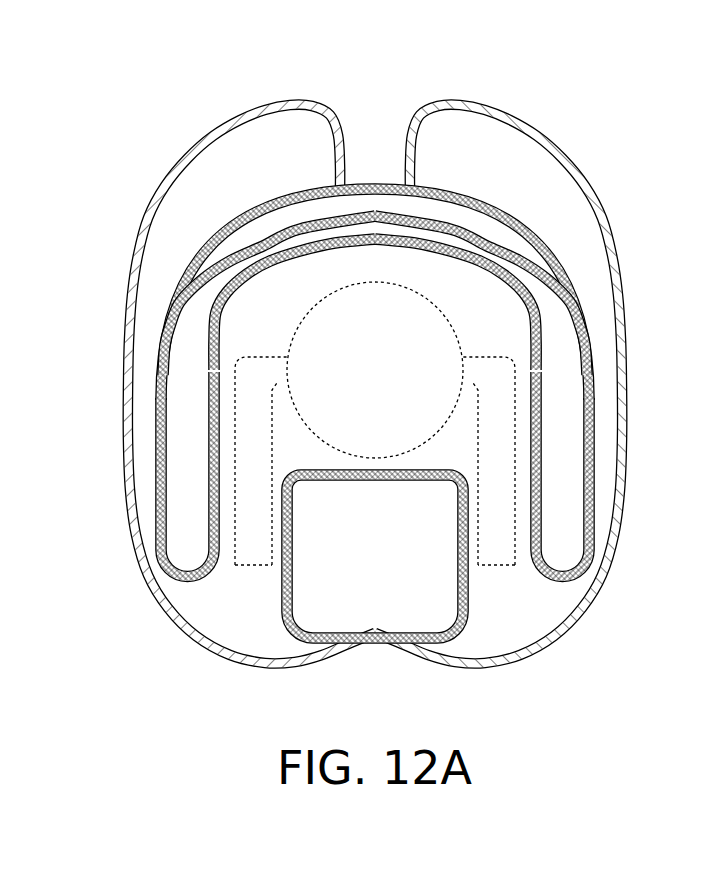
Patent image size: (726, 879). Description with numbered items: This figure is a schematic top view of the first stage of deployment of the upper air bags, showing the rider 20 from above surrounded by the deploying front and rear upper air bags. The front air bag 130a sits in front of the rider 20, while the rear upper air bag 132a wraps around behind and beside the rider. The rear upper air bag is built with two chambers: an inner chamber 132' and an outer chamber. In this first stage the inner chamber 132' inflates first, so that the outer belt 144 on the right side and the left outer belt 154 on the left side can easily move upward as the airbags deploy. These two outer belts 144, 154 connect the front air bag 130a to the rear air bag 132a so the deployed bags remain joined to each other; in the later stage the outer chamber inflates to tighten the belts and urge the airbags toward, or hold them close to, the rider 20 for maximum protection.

The outer belt 144 is at (197, 135).
The left outer belt 154 is at (515, 115).
The inner chamber 132' is at (438, 307).
The airbag 132a is at (587, 550).
The rider 20 is at (392, 371).
The air bag 130a is at (430, 613).